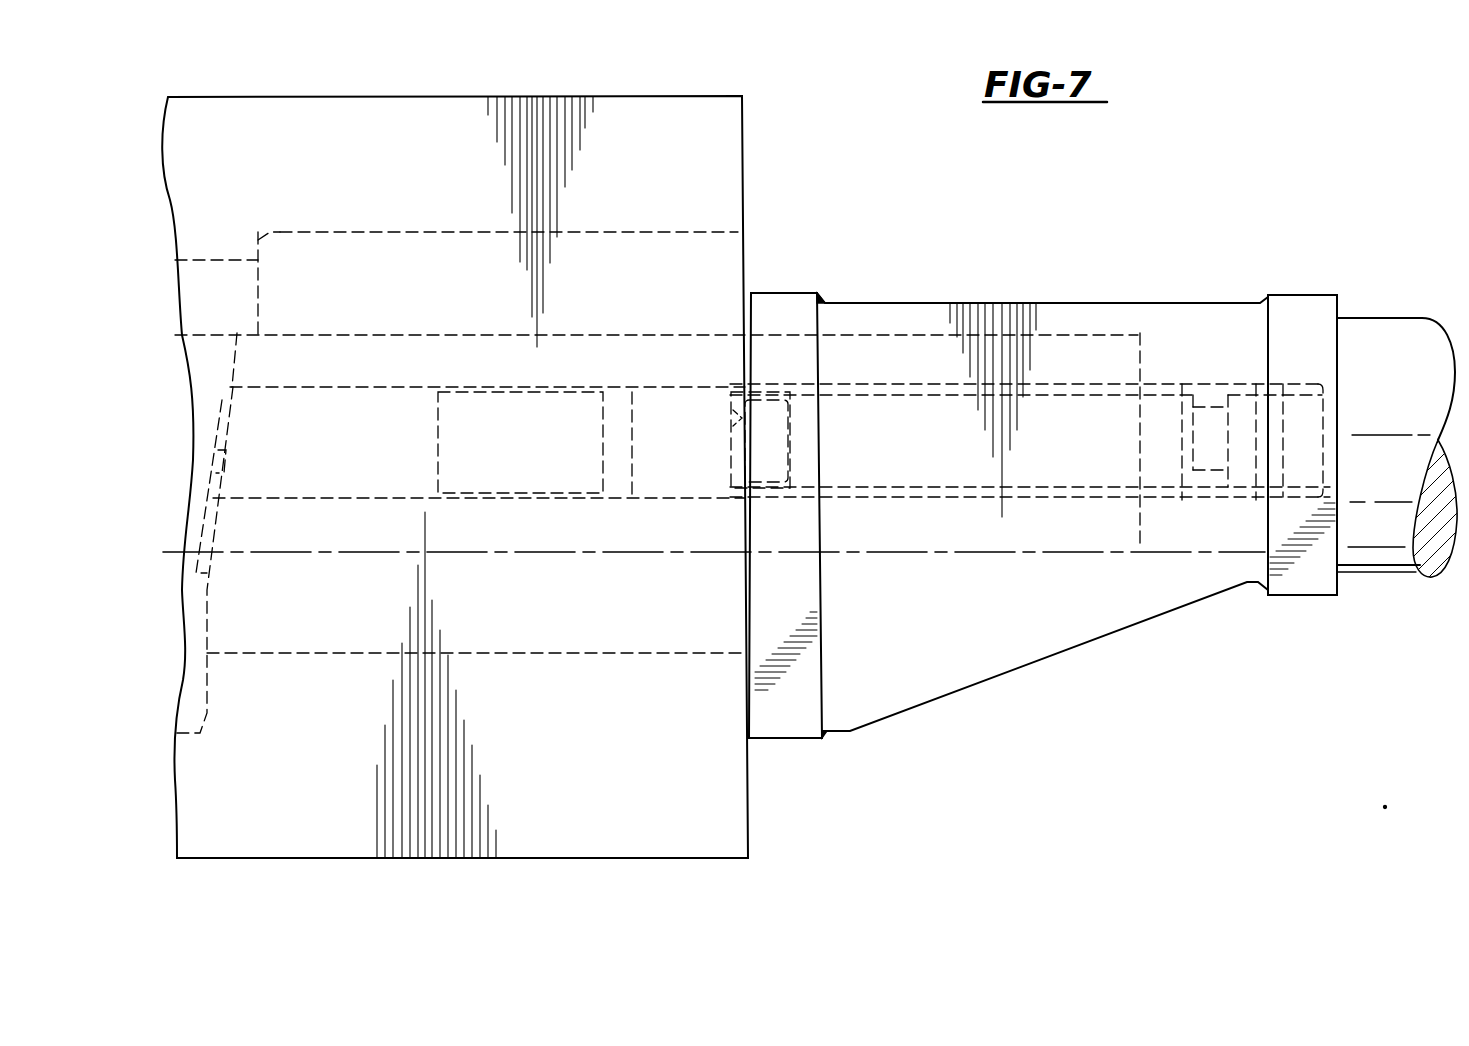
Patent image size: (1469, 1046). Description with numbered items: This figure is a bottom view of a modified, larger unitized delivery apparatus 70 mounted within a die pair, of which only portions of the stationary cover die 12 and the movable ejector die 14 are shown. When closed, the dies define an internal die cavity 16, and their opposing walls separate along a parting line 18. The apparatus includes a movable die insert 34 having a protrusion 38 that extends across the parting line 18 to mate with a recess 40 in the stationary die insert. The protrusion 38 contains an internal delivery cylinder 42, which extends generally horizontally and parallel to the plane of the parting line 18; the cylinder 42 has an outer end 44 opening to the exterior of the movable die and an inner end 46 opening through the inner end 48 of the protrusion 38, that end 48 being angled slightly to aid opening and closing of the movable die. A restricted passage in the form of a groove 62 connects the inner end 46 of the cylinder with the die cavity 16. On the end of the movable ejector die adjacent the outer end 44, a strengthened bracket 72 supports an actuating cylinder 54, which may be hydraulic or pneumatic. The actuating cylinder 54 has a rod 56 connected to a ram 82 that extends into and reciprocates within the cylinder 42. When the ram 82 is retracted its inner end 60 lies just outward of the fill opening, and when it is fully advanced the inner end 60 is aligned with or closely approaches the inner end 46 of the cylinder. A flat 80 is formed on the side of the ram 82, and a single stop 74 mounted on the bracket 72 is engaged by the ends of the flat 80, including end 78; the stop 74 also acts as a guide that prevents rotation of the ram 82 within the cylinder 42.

The stationary cover die 12 is at (743, 155).
The movable ejector die 14 is at (748, 818).
The die cavity 16 is at (738, 437).
The parting line 18 is at (272, 553).
The movable die insert 34 is at (280, 232).
The protrusion 38 is at (282, 333).
The recess 40 is at (268, 335).
The delivery cylinder 42 is at (290, 388).
The outer end 44 is at (745, 490).
The inner end 46 is at (230, 392).
The inner end of protrusion 48 is at (176, 335).
The actuating cylinder 54 is at (1398, 338).
The rod 56 is at (1242, 480).
The inner end of ram 60 is at (630, 420).
The groove 62 is at (230, 484).
The unitized delivery apparatus 70 is at (803, 293).
The bracket 72 is at (1058, 303).
The stop 74 is at (790, 445).
The end of flat 78 is at (1185, 485).
The flat 80 is at (1090, 420).
The ram 82 is at (679, 386).